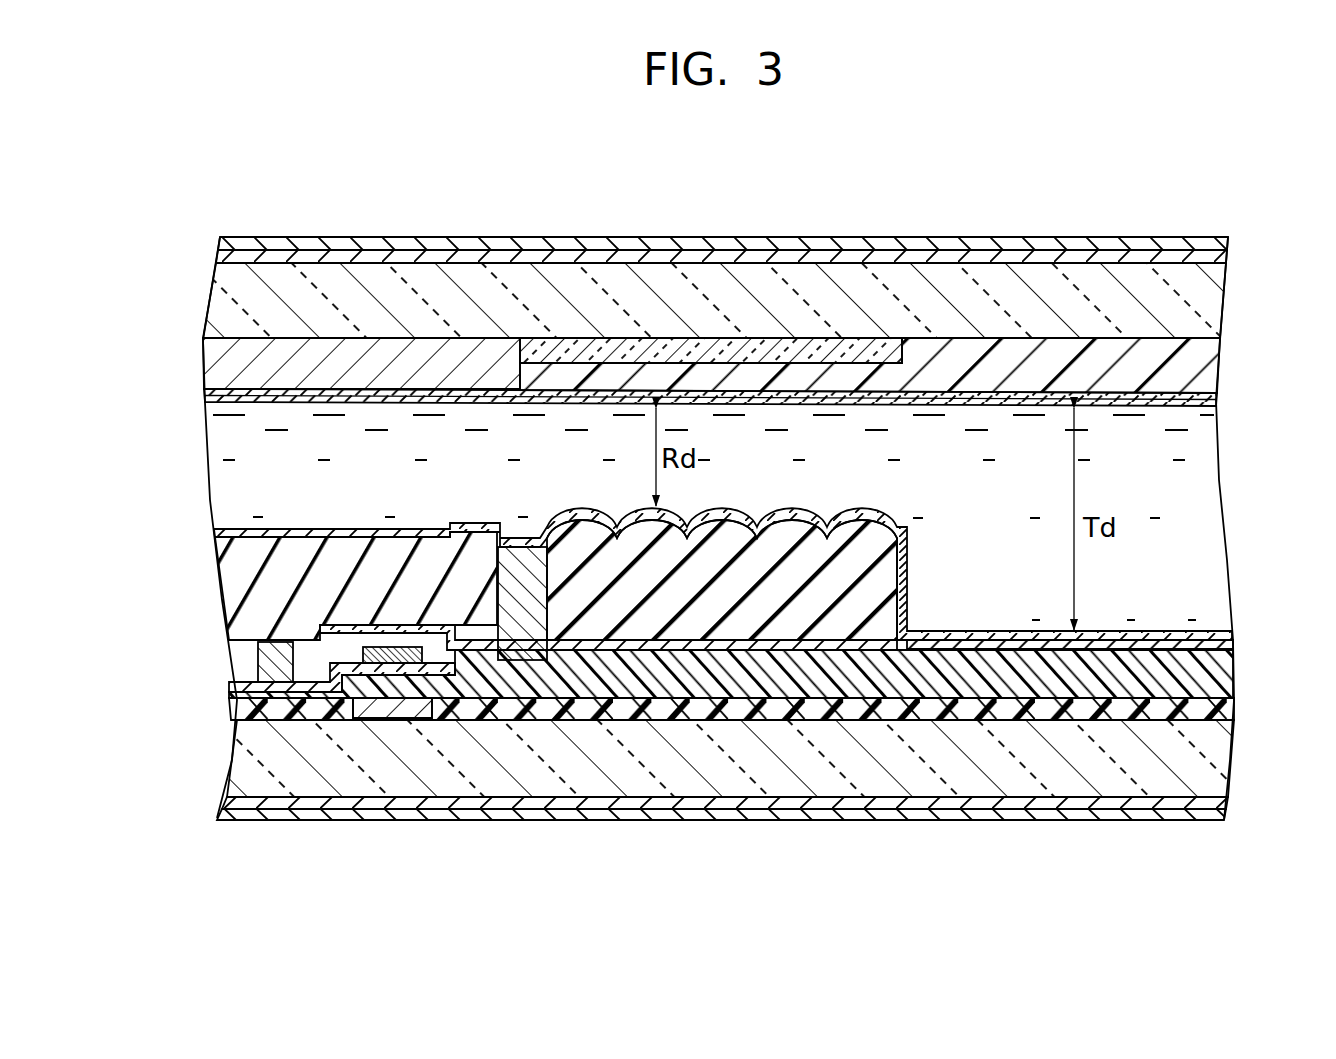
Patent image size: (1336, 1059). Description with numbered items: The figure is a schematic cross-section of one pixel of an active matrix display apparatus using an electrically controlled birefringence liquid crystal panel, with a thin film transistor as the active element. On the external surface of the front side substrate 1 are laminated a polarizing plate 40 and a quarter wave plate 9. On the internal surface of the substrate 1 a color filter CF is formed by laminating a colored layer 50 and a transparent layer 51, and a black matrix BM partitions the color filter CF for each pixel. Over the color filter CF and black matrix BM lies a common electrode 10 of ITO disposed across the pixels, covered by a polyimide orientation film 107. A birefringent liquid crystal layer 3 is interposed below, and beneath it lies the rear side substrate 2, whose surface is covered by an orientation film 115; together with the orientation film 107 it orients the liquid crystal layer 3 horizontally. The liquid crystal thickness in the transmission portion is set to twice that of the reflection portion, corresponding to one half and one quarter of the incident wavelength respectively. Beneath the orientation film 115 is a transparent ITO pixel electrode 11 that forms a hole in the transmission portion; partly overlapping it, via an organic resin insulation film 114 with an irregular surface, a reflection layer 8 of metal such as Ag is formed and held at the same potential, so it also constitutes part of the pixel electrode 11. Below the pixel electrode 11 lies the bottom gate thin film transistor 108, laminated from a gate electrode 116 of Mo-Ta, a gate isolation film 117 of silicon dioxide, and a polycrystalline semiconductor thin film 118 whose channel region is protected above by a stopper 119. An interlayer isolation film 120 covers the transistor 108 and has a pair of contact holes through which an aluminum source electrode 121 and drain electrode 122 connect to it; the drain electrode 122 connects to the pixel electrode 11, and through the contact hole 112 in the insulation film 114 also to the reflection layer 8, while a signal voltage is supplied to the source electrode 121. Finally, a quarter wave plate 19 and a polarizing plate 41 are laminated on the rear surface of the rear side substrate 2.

The front side substrate 1 is at (1203, 310).
The rear side substrate 2 is at (1232, 762).
The liquid crystal layer 3 is at (1203, 545).
The reflection layer 8 is at (757, 527).
The quarter wave plate 9 is at (1014, 258).
The common electrode 10 is at (1205, 397).
The pixel electrode 11 is at (1234, 646).
The quarter wave plate 19 is at (1228, 804).
The polarizing plate 40 is at (948, 237).
The polarizing plate 41 is at (1226, 816).
The colored layer 50 is at (656, 378).
The transparent layer 51 is at (757, 348).
The orientation film 107 is at (1197, 410).
The thin film transistor 108 is at (365, 726).
The contact hole 112 is at (500, 582).
The insulation film 114 is at (893, 566).
The orientation film 115 is at (1232, 631).
The gate electrode 116 is at (393, 705).
The gate isolation film 117 is at (1236, 712).
The semiconductor thin film 118 is at (457, 690).
The stopper 119 is at (340, 680).
The interlayer isolation film 120 is at (1236, 678).
The source electrode 121 is at (262, 661).
The drain electrode 122 is at (540, 660).
The black matrix BM is at (236, 365).
The color filter CF is at (1200, 360).